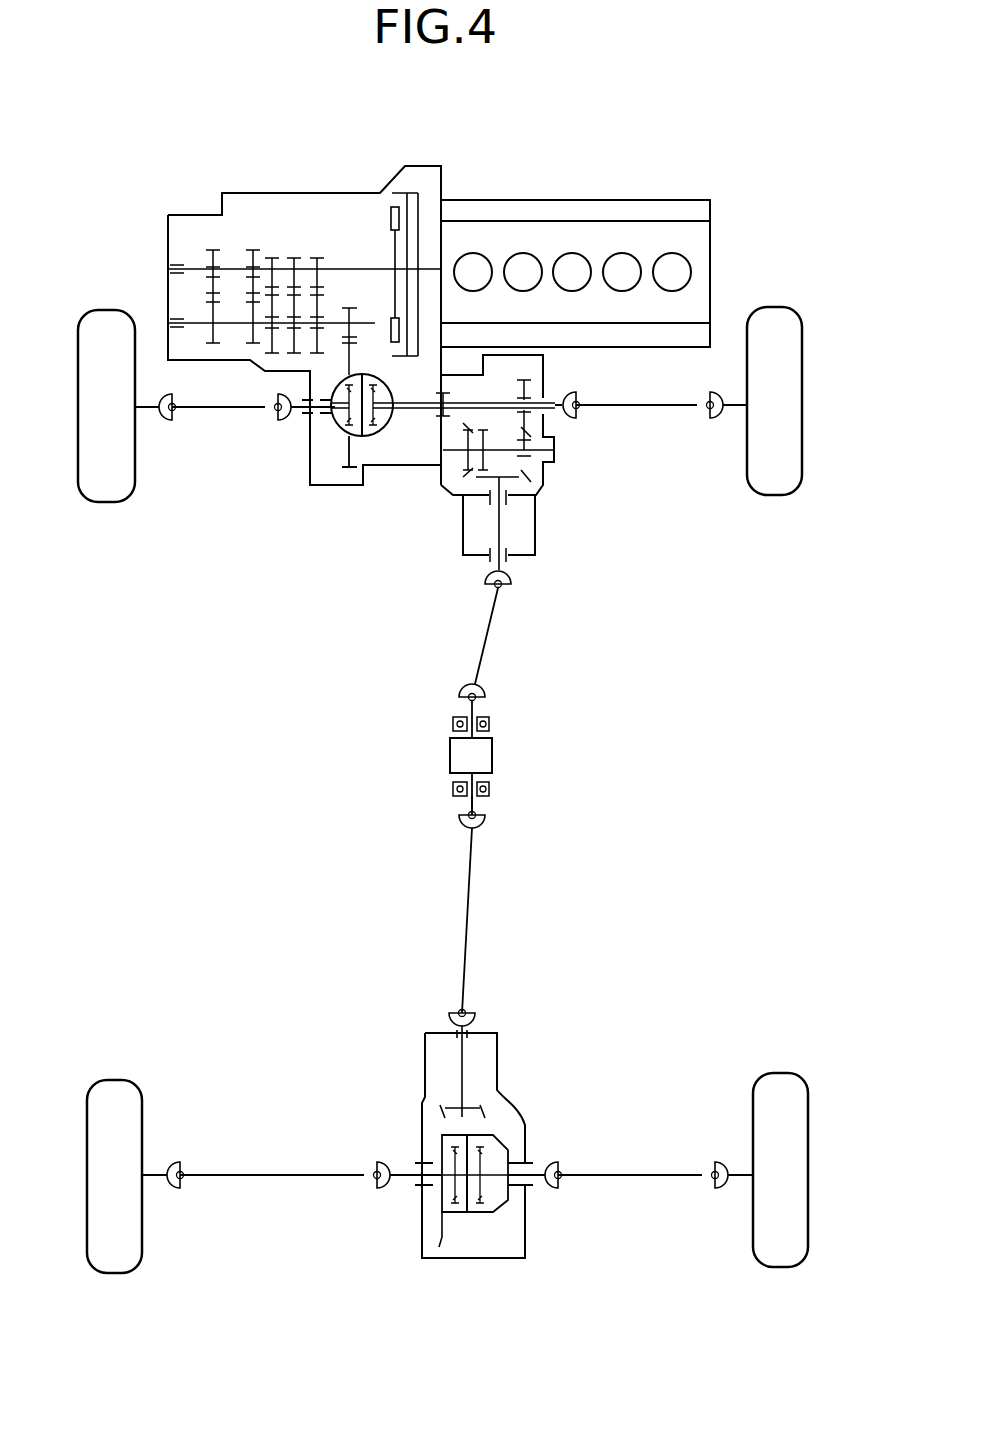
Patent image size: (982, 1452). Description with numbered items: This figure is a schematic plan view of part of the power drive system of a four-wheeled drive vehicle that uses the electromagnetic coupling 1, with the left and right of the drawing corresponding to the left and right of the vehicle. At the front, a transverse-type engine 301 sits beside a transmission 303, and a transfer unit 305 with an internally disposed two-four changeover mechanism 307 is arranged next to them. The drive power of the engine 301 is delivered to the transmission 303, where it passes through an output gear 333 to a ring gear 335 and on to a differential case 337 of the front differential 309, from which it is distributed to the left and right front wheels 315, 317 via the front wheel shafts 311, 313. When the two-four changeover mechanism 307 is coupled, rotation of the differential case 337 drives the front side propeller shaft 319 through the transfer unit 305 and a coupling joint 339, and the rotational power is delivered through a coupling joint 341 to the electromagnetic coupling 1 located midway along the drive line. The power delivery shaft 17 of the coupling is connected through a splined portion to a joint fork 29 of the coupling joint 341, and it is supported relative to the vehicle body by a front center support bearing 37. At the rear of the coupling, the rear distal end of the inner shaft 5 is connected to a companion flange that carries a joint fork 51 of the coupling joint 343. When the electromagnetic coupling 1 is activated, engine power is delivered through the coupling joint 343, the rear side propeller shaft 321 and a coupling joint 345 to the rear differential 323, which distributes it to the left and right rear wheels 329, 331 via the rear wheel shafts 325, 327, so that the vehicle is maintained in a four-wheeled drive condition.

The electromagnetic coupling 1 is at (512, 757).
The inner shaft 5 is at (470, 808).
The power delivery shaft 17 is at (466, 712).
The joint fork 29 is at (485, 707).
The front center support bearing 37 is at (493, 723).
The joint fork 51 is at (480, 808).
The engine 301 is at (613, 230).
The transmission 303 is at (313, 218).
The transfer unit 305 is at (548, 507).
The 2-4 changeover mechanism 307 is at (527, 468).
The front differential 309 is at (337, 437).
The front wheel shaft 311 is at (202, 412).
The front wheel shaft 313 is at (668, 410).
The left front wheel 315 is at (110, 310).
The right front wheel 317 is at (775, 307).
The front side propeller shaft 319 is at (487, 630).
The rear side propeller shaft 321 is at (468, 903).
The rear differential 323 is at (487, 1227).
The rear wheel shaft 325 is at (265, 1180).
The rear wheel shaft 327 is at (647, 1178).
The left rear wheel 329 is at (120, 1080).
The right rear wheel 331 is at (783, 1073).
The output gear 333 is at (349, 305).
The ring gear 335 is at (342, 460).
The differential case 337 is at (388, 425).
The coupling joint 339 is at (478, 583).
The coupling joint 341 is at (457, 693).
The coupling joint 343 is at (457, 822).
The coupling joint 345 is at (449, 1015).